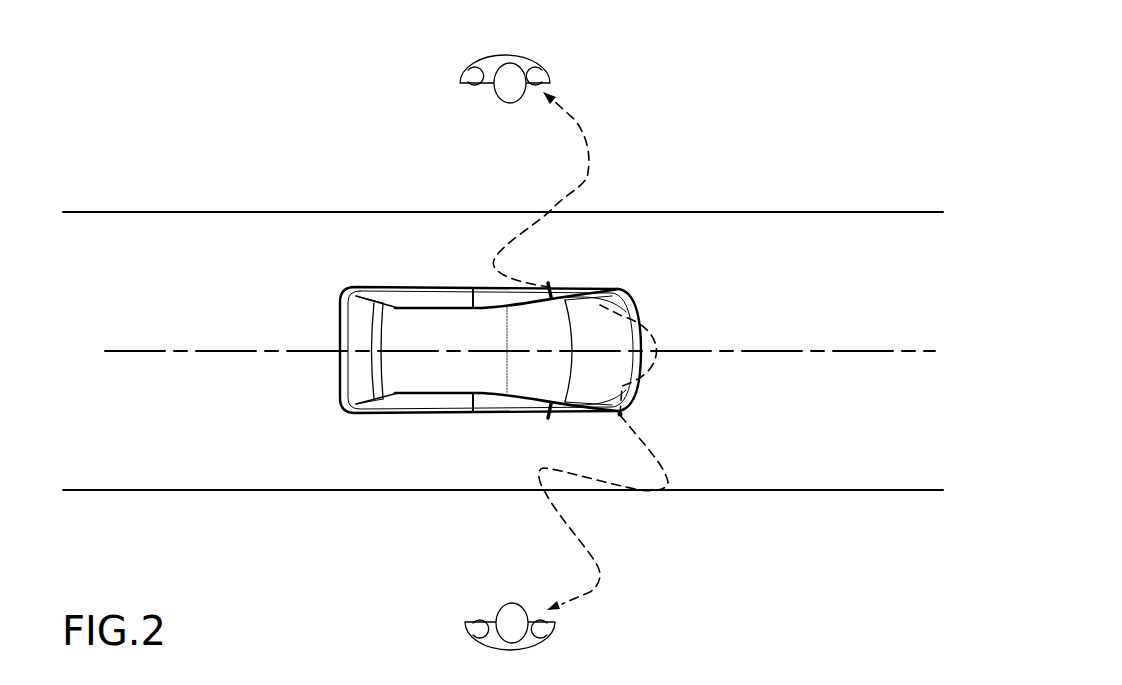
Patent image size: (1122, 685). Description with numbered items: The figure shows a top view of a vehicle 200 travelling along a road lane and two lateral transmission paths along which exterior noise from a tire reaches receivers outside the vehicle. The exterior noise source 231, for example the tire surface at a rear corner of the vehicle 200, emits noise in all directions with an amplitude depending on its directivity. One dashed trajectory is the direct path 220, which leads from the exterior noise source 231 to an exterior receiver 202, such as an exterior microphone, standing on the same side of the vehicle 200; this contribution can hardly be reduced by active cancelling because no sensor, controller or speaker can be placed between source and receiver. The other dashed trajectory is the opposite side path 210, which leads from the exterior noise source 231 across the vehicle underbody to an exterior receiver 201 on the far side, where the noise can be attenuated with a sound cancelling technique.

The vehicle 200 is at (360, 325).
The exterior receiver 201 is at (480, 70).
The exterior receiver 202 is at (483, 633).
The opposite side path 210 is at (587, 173).
The direct path 220 is at (600, 577).
The exterior noise source 231 is at (640, 412).